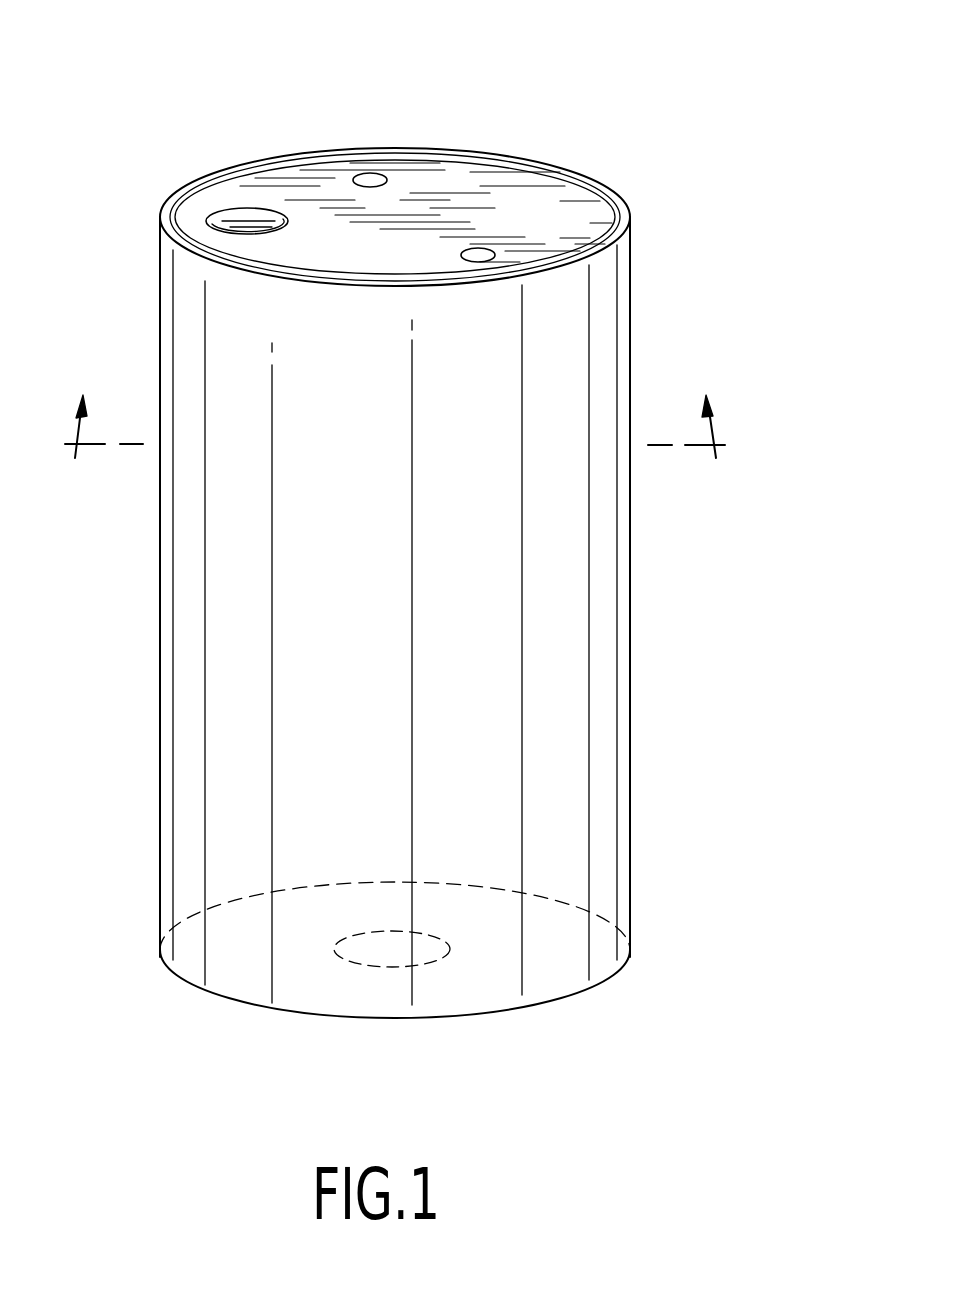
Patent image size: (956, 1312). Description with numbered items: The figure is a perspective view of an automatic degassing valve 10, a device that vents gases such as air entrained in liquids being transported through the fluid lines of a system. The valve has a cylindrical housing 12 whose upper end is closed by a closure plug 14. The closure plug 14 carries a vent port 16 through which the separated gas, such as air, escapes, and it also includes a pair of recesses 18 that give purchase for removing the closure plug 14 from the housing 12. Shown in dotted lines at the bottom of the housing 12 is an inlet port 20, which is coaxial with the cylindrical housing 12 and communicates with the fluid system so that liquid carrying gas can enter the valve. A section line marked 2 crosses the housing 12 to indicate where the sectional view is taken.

The automatic degassing valve 10 is at (727, 110).
The housing 12 is at (603, 603).
The closure plug 14 is at (447, 185).
The vent port 16 is at (250, 218).
The recesses 18 is at (476, 256).
The inlet port 20 is at (388, 950).
The section line 2- 2 is at (399, 442).